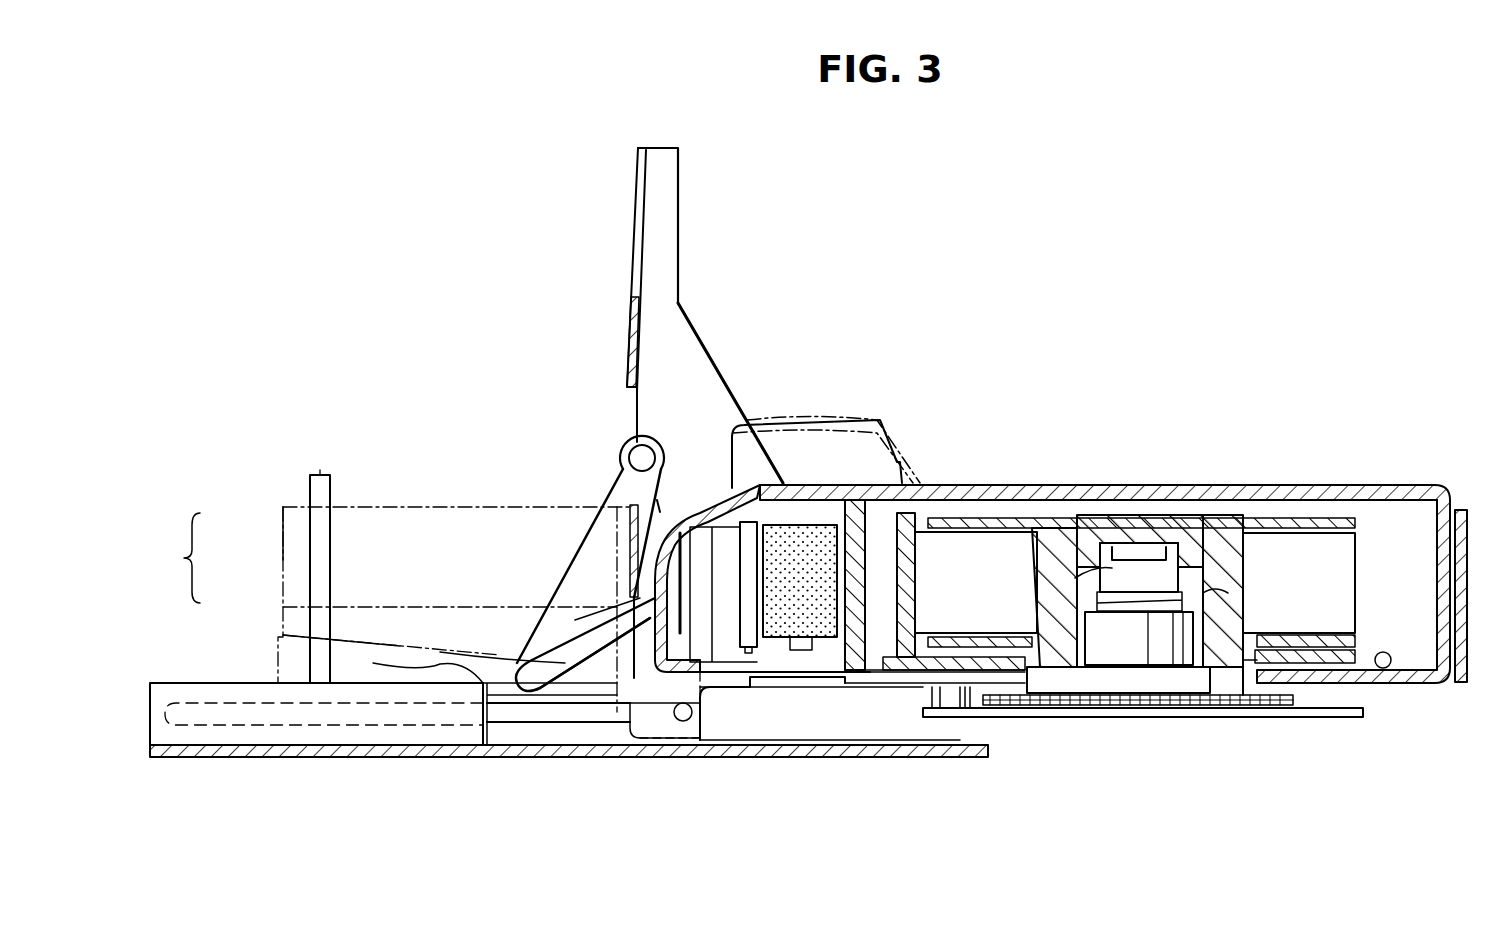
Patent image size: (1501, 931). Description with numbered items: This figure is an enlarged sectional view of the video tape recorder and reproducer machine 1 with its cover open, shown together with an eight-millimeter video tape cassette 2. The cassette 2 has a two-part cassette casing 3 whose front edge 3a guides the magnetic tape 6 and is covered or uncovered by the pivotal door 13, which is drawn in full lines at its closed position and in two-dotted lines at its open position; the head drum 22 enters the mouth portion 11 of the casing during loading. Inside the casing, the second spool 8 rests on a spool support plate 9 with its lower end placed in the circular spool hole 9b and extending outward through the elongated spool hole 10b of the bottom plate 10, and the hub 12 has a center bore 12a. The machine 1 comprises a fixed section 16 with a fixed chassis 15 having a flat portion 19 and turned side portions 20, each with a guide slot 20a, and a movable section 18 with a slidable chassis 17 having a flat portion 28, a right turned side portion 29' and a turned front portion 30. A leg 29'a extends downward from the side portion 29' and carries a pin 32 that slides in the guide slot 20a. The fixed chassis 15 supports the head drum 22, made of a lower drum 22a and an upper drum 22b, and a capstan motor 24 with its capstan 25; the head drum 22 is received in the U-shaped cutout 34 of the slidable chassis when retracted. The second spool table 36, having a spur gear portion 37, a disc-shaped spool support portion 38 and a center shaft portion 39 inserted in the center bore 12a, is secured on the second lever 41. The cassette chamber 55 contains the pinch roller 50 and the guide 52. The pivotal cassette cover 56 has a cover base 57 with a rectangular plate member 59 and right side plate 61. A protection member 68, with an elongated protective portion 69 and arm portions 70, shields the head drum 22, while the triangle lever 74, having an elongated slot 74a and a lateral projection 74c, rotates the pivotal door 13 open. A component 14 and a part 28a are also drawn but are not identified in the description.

The video tape recorder and reproducer machine 1 is at (990, 765).
The video tape cassette 2 is at (1210, 483).
The cassette casing 3 is at (1262, 485).
The front edge 3a is at (565, 662).
The magnetic tape 6 is at (665, 541).
The second spool 8 is at (1060, 520).
The spool support plate 9 is at (917, 650).
The circular spool hole 9b is at (1032, 645).
The bottom plate 10 is at (1388, 653).
The elongated spool hole 10b is at (1243, 660).
The mouth portion 11 is at (855, 683).
The hub 12 is at (1241, 546).
The center bore 12a is at (1205, 596).
The pivotal door 13 is at (846, 421).
The cassette cover 14 is at (810, 425).
The fixed chassis 15 is at (541, 758).
The fixed section 16 is at (468, 760).
The slidable chassis 17 is at (1416, 684).
The movable section 18 is at (1326, 724).
The flat portion 19 is at (340, 758).
The turned side portion 20 is at (440, 665).
The guide slot 20a is at (595, 724).
The head drum 22 is at (393, 609).
The lower drum 22a is at (290, 616).
The upper drum 22b is at (290, 556).
The capstan motor 24 is at (214, 700).
The capstan 25 is at (320, 473).
The flat portion 28 is at (1461, 683).
The rear plate tab 28a is at (1240, 700).
The turned side portion 29' is at (563, 598).
The leg 29'a is at (727, 713).
The turned front portion 30 is at (1440, 540).
The pin 32 is at (686, 722).
The U-shaped cutout 34 is at (975, 692).
The second spool table 36 is at (1140, 543).
The spur gear portion 37 is at (1146, 706).
The spool support portion 38 is at (1116, 673).
The center shaft portion 39 is at (1100, 578).
The second lever 41 is at (1266, 706).
The pinch roller 50 is at (806, 526).
The guide 52 is at (748, 522).
The cassette chamber 55 is at (1378, 724).
The pivotal cassette cover 56 is at (635, 195).
The cover base 57 is at (630, 237).
The rectangular plate member 59 is at (627, 320).
The right side plate 61 is at (690, 342).
The protection member 68 is at (635, 488).
The elongated protective portion 69 is at (632, 571).
The arm portion 70 is at (660, 507).
The triangle lever 74 is at (625, 568).
The elongated slot 74a is at (573, 638).
The lateral projection 74c is at (632, 447).